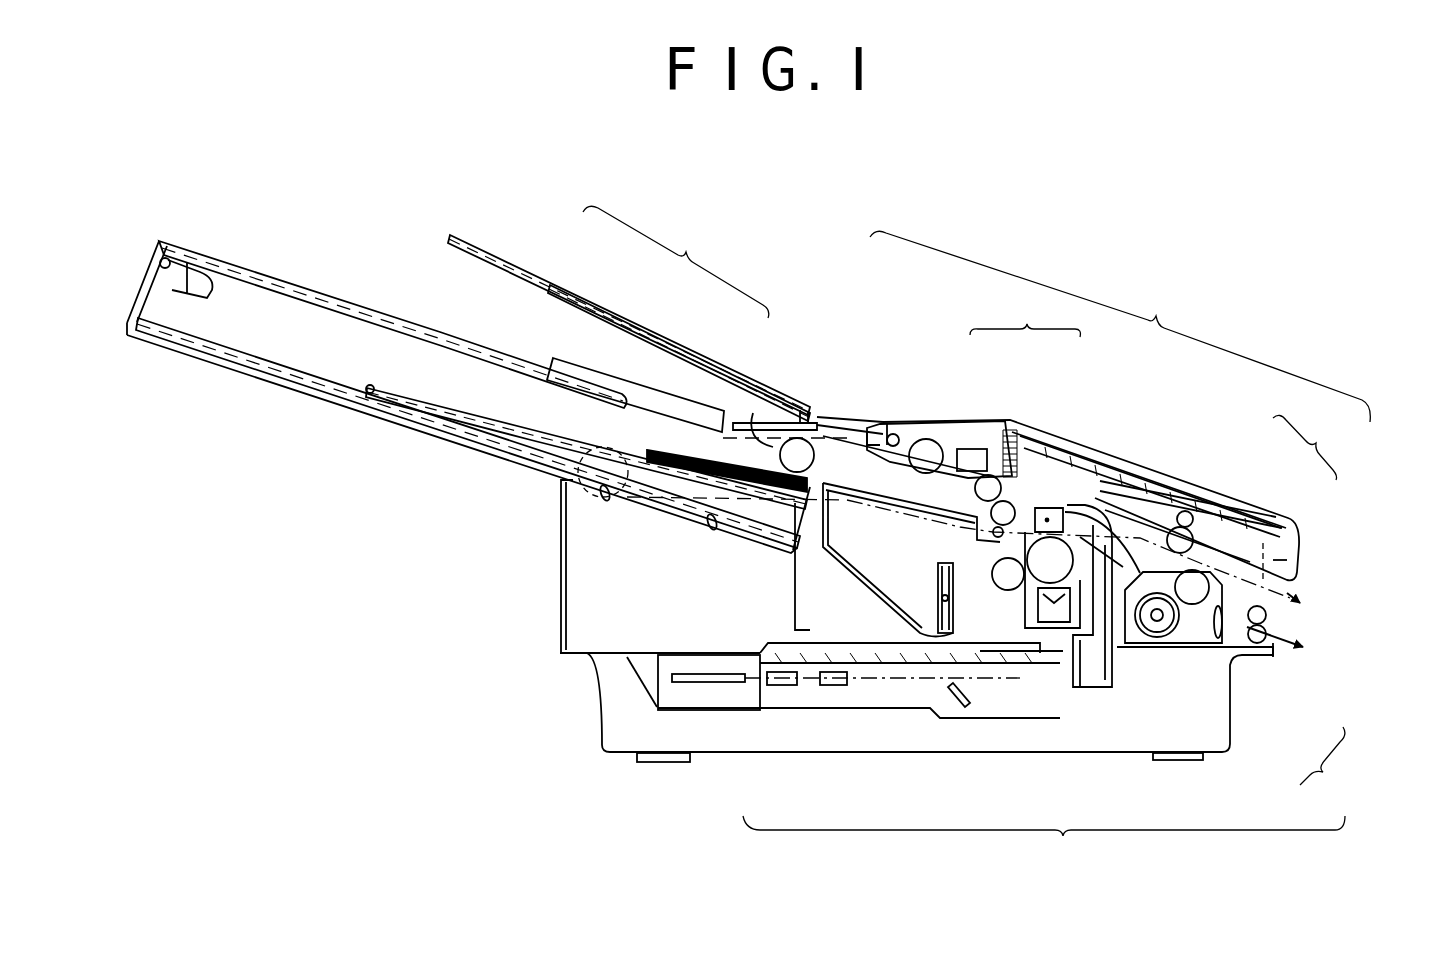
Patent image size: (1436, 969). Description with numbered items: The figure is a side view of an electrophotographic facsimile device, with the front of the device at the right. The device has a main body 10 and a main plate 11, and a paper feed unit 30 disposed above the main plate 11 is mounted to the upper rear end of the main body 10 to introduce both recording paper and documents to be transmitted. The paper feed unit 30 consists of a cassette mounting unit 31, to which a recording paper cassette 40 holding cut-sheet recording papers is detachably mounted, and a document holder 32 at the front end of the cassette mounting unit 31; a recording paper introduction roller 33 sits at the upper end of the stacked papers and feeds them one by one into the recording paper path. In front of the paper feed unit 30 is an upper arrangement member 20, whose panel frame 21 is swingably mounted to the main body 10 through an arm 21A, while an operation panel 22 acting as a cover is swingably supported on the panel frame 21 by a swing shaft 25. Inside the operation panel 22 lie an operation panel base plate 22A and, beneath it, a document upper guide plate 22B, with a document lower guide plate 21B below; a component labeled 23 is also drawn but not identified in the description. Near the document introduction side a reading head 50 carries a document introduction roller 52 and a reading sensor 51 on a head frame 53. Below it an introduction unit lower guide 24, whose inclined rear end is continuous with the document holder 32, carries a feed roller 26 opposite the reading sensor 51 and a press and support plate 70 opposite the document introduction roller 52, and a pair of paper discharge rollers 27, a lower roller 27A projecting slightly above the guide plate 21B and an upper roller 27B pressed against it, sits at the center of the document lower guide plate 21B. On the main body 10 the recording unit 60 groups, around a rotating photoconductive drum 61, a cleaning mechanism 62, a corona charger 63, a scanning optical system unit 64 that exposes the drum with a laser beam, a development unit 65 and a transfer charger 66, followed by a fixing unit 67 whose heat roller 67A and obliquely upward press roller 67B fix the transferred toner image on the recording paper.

The main body 10 is at (548, 575).
The main plate 11 is at (600, 690).
The upper arrangement member 20 is at (1120, 405).
The panel frame 21 is at (1268, 590).
The arm 21A is at (875, 430).
The document lower guide plate 21B is at (1117, 497).
The operation panel 22 is at (1277, 515).
The operation panel base plate 22A is at (1123, 463).
The document upper guide plate 22B is at (1300, 558).
The guide plate 23 is at (1152, 466).
The introduction unit lower guide 24 is at (845, 430).
The swing shaft 25 is at (876, 462).
The feed roller 26 is at (1098, 495).
The pair of paper discharge rollers 27 is at (1311, 444).
The lower roller 27A is at (1195, 533).
The upper roller 27B is at (1195, 508).
The paper feed unit 30 is at (676, 262).
The cassette mounting unit 31 is at (705, 405).
The document holder 32 is at (540, 280).
The recording paper introduction roller 33 is at (765, 440).
The recording paper cassette 40 is at (340, 290).
The reading head 50 is at (973, 386).
The reading sensor 51 is at (1015, 430).
The document introduction roller 52 is at (945, 468).
The head frame 53 is at (983, 458).
The recording unit 60 is at (991, 813).
The photoconductive drum 61 is at (1148, 612).
The cleaning mechanism 62 is at (1082, 613).
The corona charger 63 is at (1087, 657).
The scanning optical system unit 64 is at (862, 716).
The development unit 65 is at (845, 550).
The transfer charger 66 is at (1165, 635).
The fixing unit 67 is at (1332, 761).
The heat roller 67A is at (1180, 650).
The press roller 67B is at (1240, 660).
The press and support plate 70 is at (937, 487).